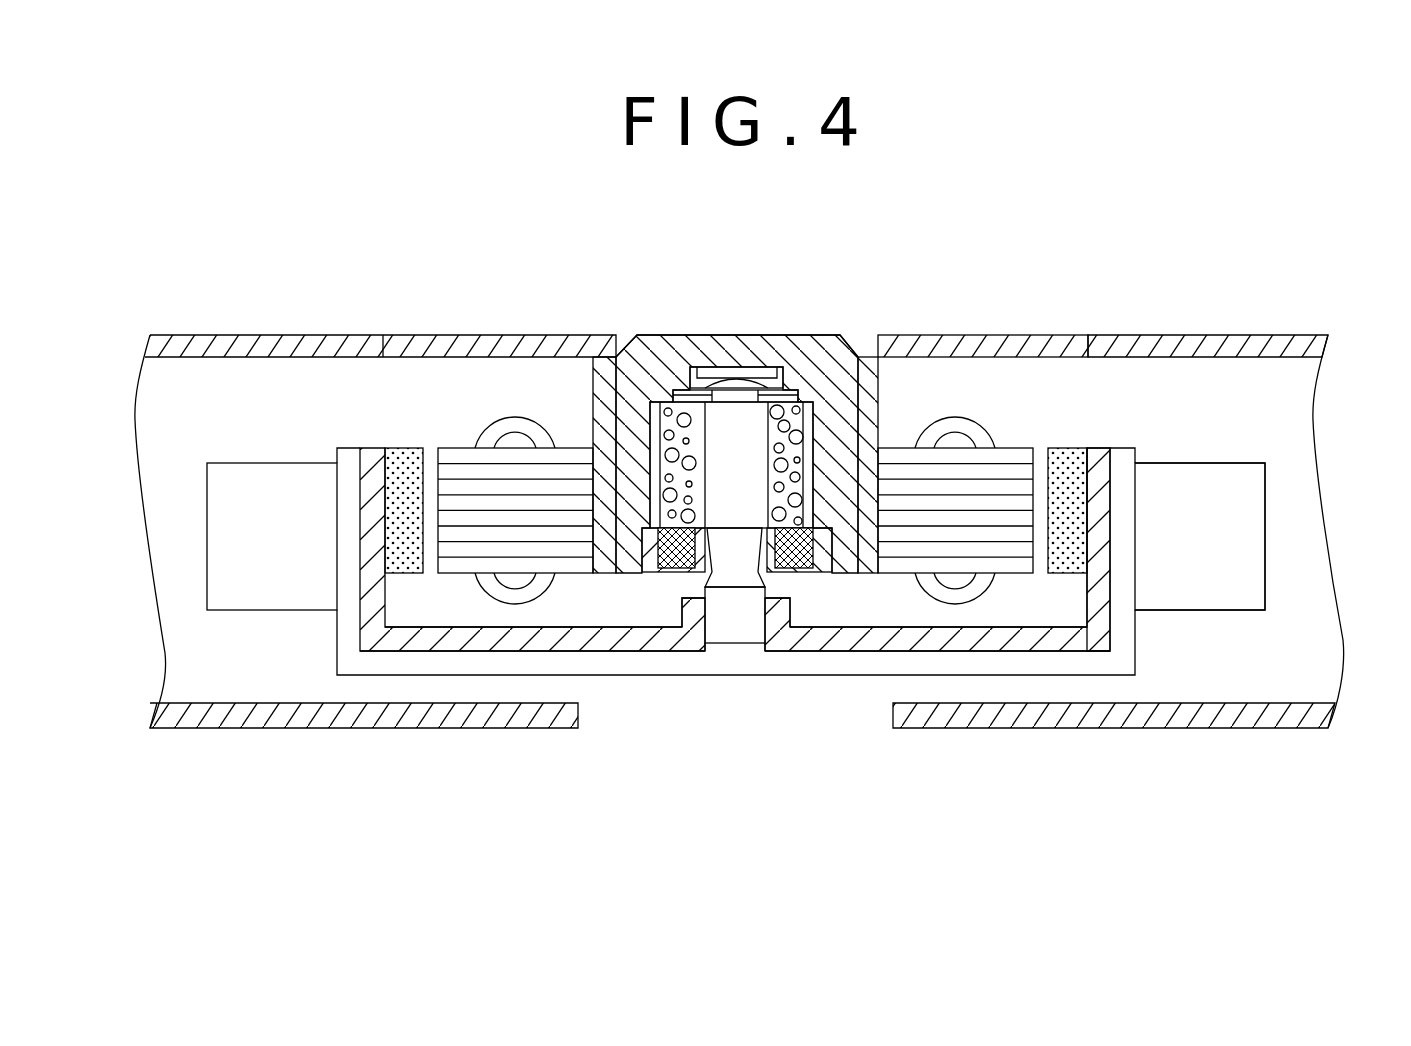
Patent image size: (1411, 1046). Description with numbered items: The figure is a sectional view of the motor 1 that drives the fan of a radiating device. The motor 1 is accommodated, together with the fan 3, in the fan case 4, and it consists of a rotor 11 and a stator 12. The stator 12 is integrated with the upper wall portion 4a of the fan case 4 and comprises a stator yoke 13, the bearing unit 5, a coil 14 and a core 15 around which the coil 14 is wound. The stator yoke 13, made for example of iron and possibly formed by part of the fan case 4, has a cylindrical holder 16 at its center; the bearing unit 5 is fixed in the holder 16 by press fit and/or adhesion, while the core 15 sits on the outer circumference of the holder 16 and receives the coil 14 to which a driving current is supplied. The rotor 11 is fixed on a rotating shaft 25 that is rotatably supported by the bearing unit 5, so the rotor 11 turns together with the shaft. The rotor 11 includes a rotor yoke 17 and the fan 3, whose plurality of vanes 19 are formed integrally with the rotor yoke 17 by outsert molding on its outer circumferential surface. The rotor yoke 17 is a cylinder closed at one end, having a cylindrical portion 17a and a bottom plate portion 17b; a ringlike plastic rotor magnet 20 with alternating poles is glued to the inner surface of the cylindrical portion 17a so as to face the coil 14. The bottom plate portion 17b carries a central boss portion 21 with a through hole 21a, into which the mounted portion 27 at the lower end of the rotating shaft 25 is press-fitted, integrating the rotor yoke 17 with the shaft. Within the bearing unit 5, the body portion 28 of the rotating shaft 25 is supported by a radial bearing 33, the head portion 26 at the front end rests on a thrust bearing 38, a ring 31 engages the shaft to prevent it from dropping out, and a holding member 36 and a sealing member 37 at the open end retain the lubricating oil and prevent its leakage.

The motor 1 is at (1092, 318).
The fan 3 is at (1245, 520).
The fan case 4 is at (1237, 728).
The upper wall portion 4a is at (1228, 345).
The bearing unit 5 is at (735, 345).
The rotor 11 is at (412, 663).
The stator 12 is at (452, 345).
The stator yoke 13 is at (997, 345).
The coil 14 is at (495, 420).
The core 15 is at (468, 567).
The cylindrical holder 16 is at (873, 387).
The rotor yoke 17 is at (1097, 645).
The cylindrical portion 17a is at (1100, 452).
The bottom plate portion 17b is at (830, 637).
The vanes 19 is at (228, 547).
The rotor magnet 20 is at (403, 448).
The boss portion 21 is at (783, 607).
The through hole 21a is at (705, 608).
The rotating shaft 25 is at (662, 405).
The head portion 26 is at (740, 380).
The mounted portion 27 is at (753, 625).
The body portion 28 is at (680, 570).
The ring 31 is at (778, 392).
The radial bearing 33 is at (643, 530).
The holding member 36 is at (773, 573).
The sealing member 37 is at (856, 545).
The thrust bearing 38 is at (723, 440).